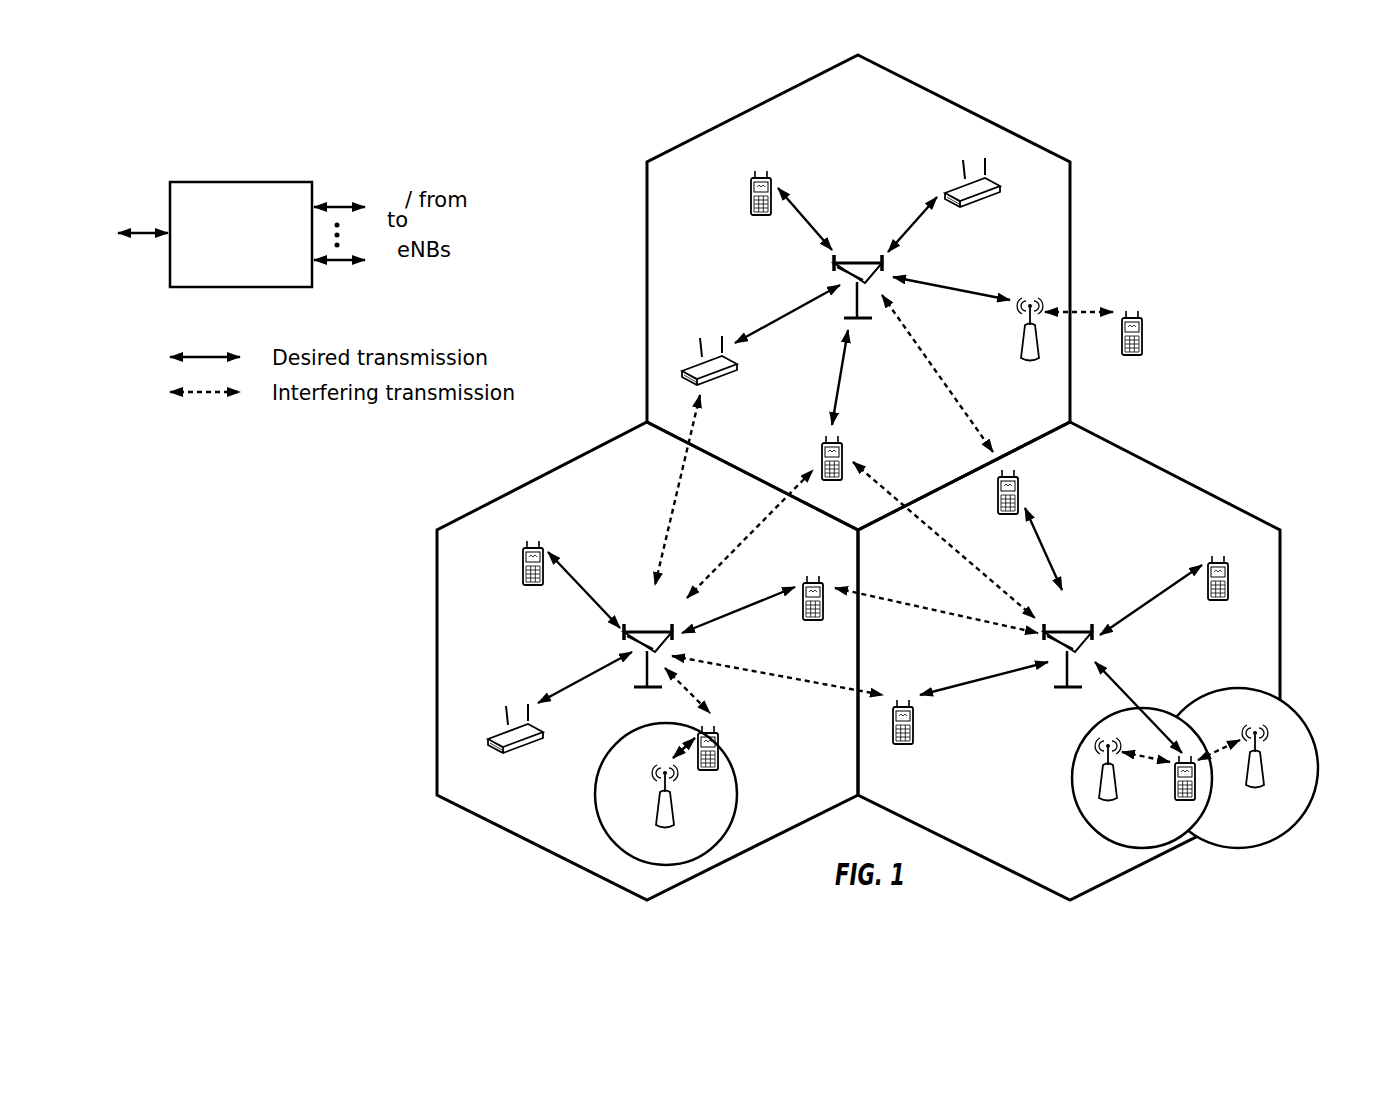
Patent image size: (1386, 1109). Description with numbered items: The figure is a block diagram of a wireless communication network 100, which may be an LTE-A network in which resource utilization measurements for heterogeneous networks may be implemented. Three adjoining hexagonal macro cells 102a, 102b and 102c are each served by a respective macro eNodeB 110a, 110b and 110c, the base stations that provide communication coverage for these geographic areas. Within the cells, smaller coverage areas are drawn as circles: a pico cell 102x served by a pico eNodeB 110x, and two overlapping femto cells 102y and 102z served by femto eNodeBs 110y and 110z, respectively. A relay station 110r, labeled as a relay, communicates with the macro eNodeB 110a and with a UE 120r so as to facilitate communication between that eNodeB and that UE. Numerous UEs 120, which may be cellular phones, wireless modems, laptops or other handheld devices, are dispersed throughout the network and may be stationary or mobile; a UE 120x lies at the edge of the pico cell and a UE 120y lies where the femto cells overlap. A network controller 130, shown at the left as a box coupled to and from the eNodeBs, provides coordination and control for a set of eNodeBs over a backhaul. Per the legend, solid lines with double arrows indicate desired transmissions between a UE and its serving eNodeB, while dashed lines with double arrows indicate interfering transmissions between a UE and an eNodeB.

The wireless communication network 100 is at (1212, 122).
The macro cell 102a is at (963, 108).
The macro cell 102b is at (541, 474).
The macro cell 102c is at (1175, 477).
The pico cell 102x is at (612, 741).
The femto cell 102y is at (1077, 744).
The femto cell 102z is at (1231, 688).
The macro eNodeB 110a is at (857, 262).
The macro eNodeB 110b is at (652, 630).
The macro eNodeB 110c is at (1073, 630).
The relay station 110r is at (1020, 344).
The pico eNodeB 110x is at (676, 822).
The femto eNodeB 110y is at (1117, 798).
The femto eNodeB 110z is at (1263, 782).
The user equipment (UE) 120 is at (752, 187).
The UE 120r is at (1141, 345).
The UE 120x is at (718, 742).
The UE 120y is at (1176, 803).
The network controller 130 is at (240, 182).